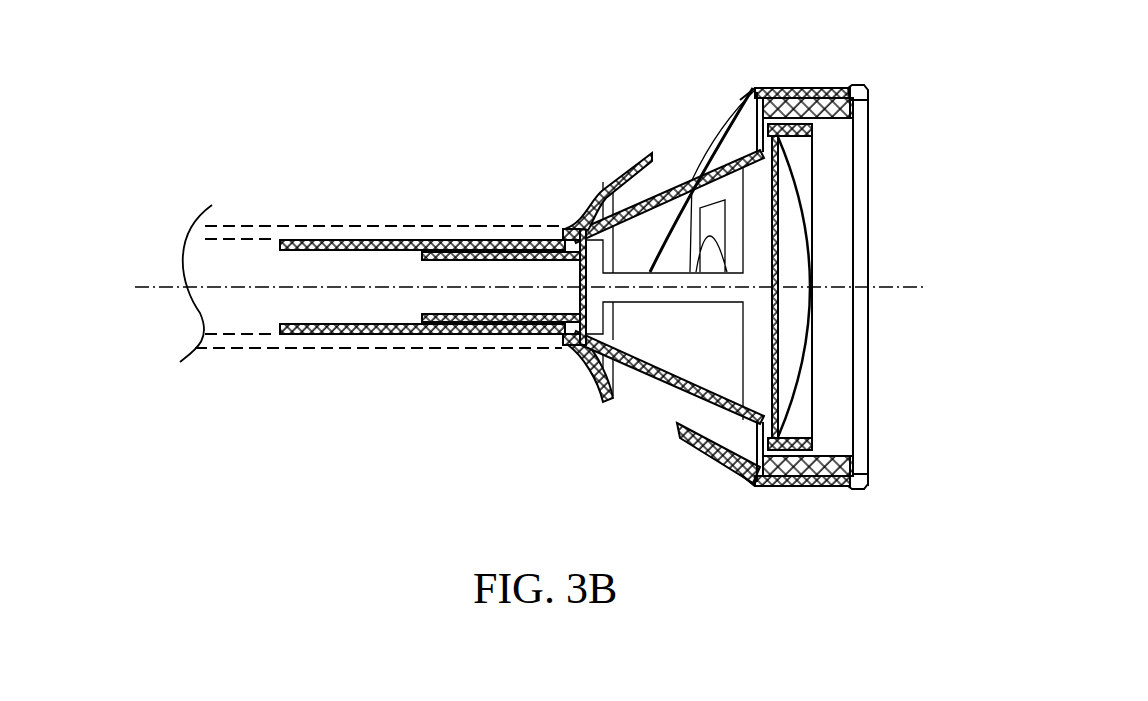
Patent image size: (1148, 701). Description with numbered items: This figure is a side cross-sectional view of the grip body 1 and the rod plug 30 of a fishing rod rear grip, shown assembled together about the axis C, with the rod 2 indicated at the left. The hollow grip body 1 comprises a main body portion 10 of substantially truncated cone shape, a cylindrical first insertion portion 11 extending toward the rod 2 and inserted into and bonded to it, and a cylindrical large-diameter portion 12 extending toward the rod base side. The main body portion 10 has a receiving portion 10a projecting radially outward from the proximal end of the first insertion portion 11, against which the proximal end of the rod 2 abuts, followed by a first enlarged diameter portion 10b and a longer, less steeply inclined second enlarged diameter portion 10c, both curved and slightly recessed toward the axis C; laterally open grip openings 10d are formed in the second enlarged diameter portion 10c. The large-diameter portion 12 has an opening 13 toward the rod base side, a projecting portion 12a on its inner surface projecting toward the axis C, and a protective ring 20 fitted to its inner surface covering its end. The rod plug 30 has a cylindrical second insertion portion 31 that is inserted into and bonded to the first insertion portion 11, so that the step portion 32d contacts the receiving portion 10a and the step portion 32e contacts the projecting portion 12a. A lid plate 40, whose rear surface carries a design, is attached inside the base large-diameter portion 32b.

The grip body 1 is at (610, 275).
The rod 2 is at (248, 226).
The axis C is at (172, 282).
The main body portion 10 is at (617, 229).
The receiving portion 10a is at (563, 232).
The first enlarged diameter portion 10b is at (574, 230).
The second enlarged diameter portion 10c is at (722, 112).
The grip openings 10d is at (655, 176).
The first insertion portion 11 is at (345, 330).
The large-diameter portion 12 is at (766, 275).
The projecting portion 12a is at (757, 437).
The opening 13 is at (867, 95).
The protective ring 20 is at (866, 485).
The rod plug 30 is at (648, 392).
The second insertion portion 31 is at (470, 318).
The base large-diameter portion 32b is at (820, 479).
The step portion 32d is at (556, 343).
The step portion 32e is at (745, 440).
The lid plate 40 is at (777, 307).